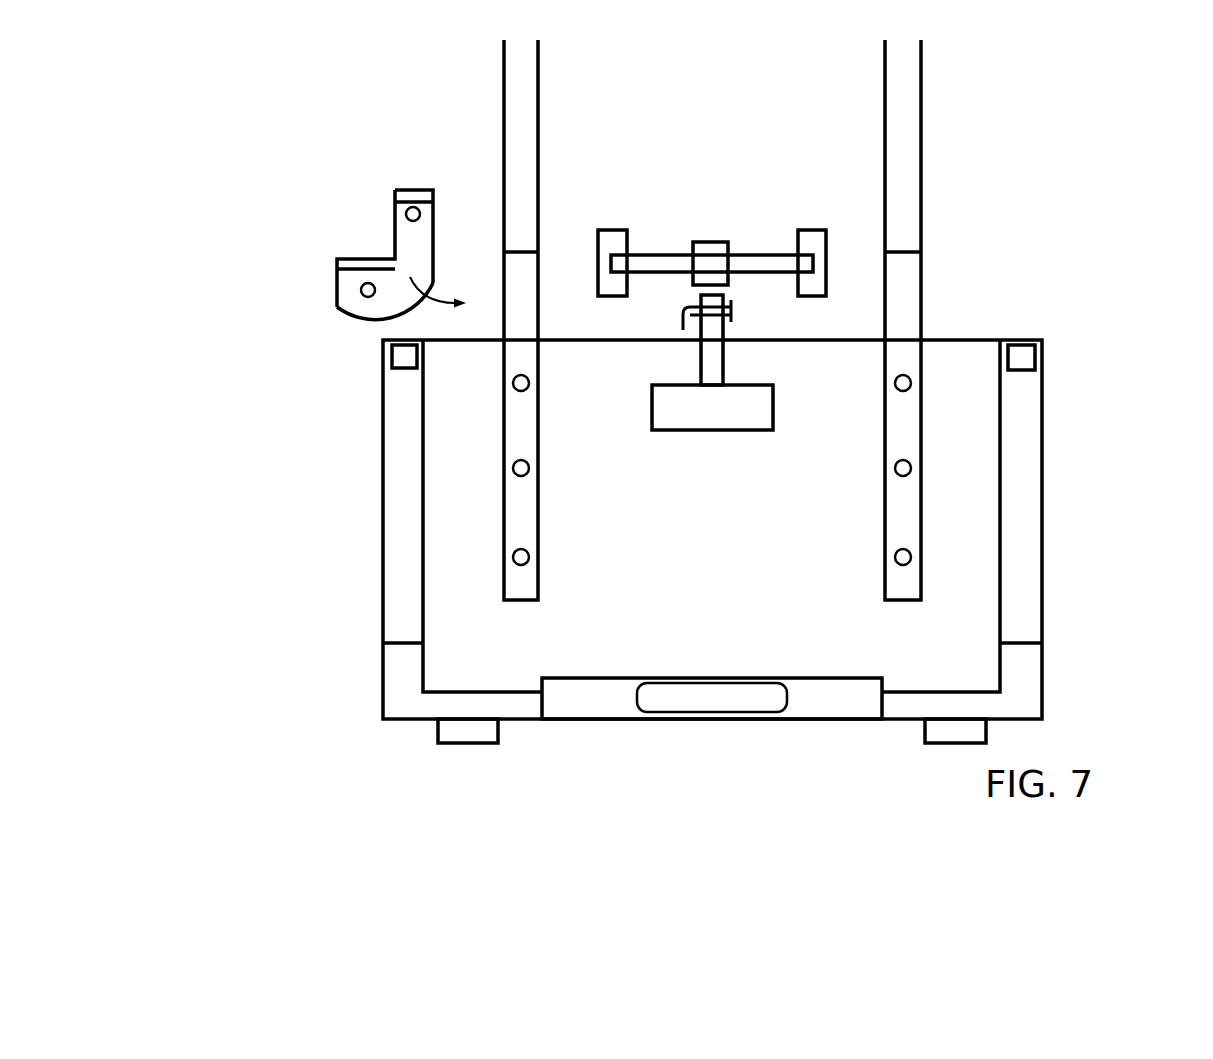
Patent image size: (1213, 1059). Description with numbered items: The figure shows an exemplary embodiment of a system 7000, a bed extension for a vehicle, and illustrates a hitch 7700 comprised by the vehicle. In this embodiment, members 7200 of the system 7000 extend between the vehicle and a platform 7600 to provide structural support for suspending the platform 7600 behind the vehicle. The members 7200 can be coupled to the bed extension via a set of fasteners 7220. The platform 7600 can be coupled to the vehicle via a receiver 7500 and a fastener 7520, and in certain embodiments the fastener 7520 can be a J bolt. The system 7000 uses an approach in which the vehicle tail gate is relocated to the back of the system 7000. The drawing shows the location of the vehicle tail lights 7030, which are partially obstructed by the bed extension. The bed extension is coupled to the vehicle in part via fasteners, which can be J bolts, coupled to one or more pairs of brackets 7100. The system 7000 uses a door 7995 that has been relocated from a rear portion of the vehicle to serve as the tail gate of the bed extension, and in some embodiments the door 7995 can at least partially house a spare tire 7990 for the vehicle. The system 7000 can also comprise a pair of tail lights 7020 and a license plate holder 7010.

The system 7000 is at (689, 405).
The license plate holder 7010 is at (383, 720).
The tail lights 7020 is at (505, 735).
The vehicle tail lights 7030 is at (1018, 357).
The brackets 7100 is at (372, 302).
The members 7200 is at (597, 320).
The set of fasteners 7220 is at (524, 560).
The receiver 7500 is at (728, 353).
The fastener 7520 is at (738, 310).
The platform 7600 is at (933, 320).
The hitch 7700 is at (713, 250).
The spare tire 7990 is at (723, 700).
The door 7995 is at (712, 649).